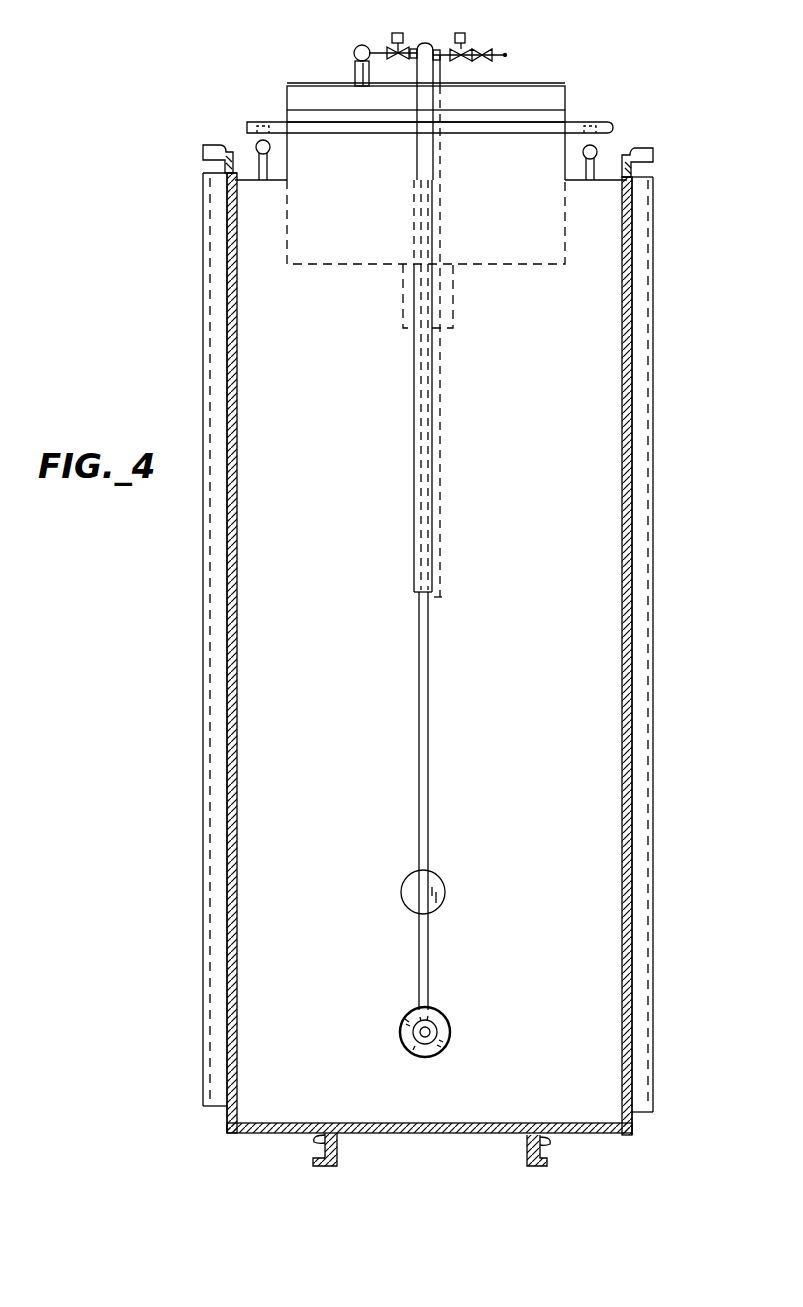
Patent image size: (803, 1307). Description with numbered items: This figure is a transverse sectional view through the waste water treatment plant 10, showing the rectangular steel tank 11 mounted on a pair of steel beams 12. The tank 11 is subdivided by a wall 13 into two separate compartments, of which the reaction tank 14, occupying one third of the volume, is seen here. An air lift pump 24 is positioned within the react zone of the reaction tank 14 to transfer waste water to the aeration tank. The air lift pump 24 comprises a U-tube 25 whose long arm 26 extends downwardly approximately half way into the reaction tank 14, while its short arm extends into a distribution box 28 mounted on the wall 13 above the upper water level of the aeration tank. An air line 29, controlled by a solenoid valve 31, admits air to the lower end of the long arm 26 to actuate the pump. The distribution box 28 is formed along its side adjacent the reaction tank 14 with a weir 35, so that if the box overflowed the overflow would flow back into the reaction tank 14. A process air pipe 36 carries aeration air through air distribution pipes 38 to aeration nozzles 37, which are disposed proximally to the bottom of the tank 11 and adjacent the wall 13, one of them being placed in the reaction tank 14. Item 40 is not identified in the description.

The waste water treatment plant 10 is at (662, 502).
The rectangular steel tank 11 is at (230, 1119).
The steel beams 12 is at (337, 1141).
The wall 13 is at (316, 496).
The reaction tank 14 is at (240, 772).
The air lift pump 24 is at (299, 92).
The U-tube 25 is at (428, 42).
The long arm 26 is at (414, 512).
The distribution box 28 is at (315, 97).
The air line 29 is at (442, 486).
The solenoid valve 31 is at (468, 38).
The weir 35 is at (344, 110).
The process air pipe 36 is at (580, 122).
The aeration nozzles 37 is at (441, 1011).
The air distribution pipes 38 is at (256, 150).
The pressure gauge 40 is at (359, 44).